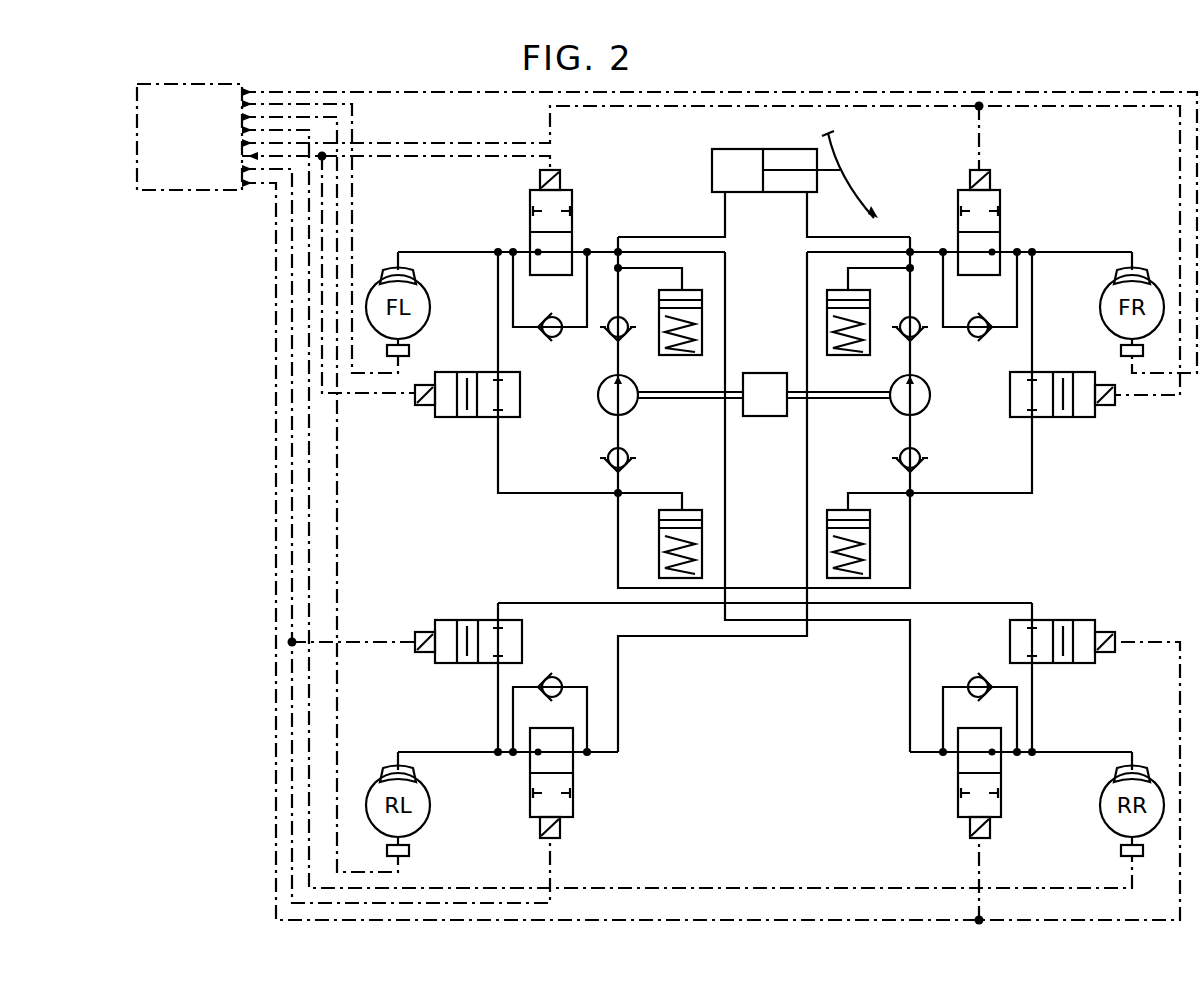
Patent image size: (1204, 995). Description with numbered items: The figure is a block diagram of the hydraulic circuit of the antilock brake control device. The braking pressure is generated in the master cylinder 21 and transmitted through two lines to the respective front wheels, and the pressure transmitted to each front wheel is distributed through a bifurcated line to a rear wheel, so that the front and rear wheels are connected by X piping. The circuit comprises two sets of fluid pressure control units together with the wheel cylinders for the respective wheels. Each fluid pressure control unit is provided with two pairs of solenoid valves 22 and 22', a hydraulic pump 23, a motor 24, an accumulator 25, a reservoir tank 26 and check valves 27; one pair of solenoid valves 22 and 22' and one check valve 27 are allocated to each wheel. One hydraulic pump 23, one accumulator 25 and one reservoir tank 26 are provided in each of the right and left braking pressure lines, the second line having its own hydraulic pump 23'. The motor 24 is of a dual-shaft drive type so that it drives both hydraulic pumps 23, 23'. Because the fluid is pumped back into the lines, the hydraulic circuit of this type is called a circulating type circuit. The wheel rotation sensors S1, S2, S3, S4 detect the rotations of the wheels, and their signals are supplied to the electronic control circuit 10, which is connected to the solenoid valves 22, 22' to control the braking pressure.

The electronic control circuit 10 is at (190, 196).
The master cylinder 21 is at (717, 158).
The solenoid valve 22 is at (769, 504).
The solenoid valve 22' is at (770, 517).
The hydraulic pump 23 is at (590, 407).
The hydraulic pump 23' is at (938, 407).
The motor 24 is at (780, 418).
The accumulator 25 is at (827, 330).
The reservoir tank 26 is at (827, 556).
The check valve 27 is at (560, 339).
The wheel rotation sensor S1 is at (409, 350).
The wheel rotation sensor S2 is at (1121, 350).
The wheel rotation sensor S3 is at (409, 853).
The wheel rotation sensor S4 is at (1121, 853).